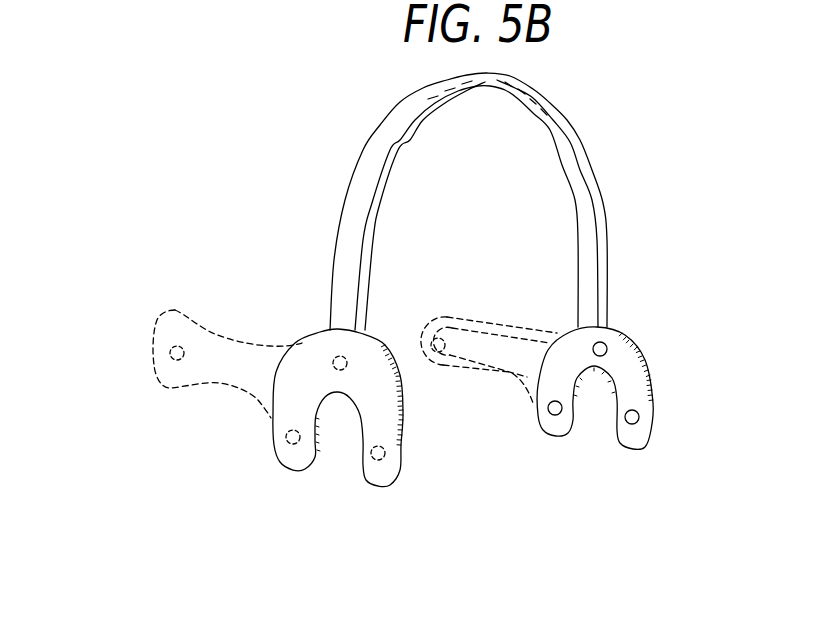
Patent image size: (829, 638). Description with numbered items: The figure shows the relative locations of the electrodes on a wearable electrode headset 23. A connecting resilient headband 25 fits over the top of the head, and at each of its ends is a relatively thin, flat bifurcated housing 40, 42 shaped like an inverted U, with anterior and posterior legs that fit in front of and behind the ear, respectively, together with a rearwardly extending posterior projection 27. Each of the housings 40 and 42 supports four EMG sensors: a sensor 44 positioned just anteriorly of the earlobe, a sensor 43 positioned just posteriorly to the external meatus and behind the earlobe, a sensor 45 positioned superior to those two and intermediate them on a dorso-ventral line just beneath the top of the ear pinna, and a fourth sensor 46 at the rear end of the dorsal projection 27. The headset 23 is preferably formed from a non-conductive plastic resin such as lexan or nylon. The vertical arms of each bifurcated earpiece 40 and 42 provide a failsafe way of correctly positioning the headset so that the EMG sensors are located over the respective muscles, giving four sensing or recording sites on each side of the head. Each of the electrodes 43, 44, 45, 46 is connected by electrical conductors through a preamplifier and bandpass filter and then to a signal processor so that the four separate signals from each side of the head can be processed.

The headset 23 is at (393, 96).
The resilient headband 25 is at (603, 205).
The posterior projection 27 is at (150, 345).
The housing 40 is at (403, 460).
The housing 42 is at (653, 403).
The sensor 43 is at (277, 450).
The sensor 44 is at (363, 487).
The sensor 45 is at (348, 366).
The sensor 46 is at (170, 352).